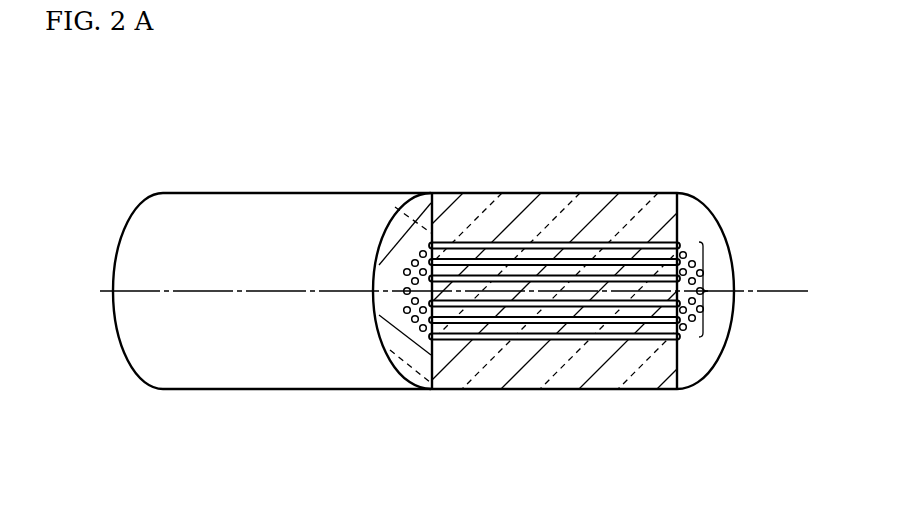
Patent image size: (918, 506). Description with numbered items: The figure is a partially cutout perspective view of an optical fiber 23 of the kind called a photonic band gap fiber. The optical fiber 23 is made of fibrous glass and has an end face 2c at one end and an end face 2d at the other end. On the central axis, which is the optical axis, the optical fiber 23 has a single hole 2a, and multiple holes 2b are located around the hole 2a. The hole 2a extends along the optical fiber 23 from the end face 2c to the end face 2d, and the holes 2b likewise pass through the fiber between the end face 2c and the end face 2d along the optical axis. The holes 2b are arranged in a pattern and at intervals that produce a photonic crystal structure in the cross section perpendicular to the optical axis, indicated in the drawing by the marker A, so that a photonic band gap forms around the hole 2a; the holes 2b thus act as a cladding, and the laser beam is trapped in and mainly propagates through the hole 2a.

The optical fiber 23 is at (336, 193).
The hole 2a is at (583, 289).
The holes 2b is at (491, 242).
The end face 2c is at (695, 210).
The end face 2d is at (134, 331).
The section A is at (789, 291).